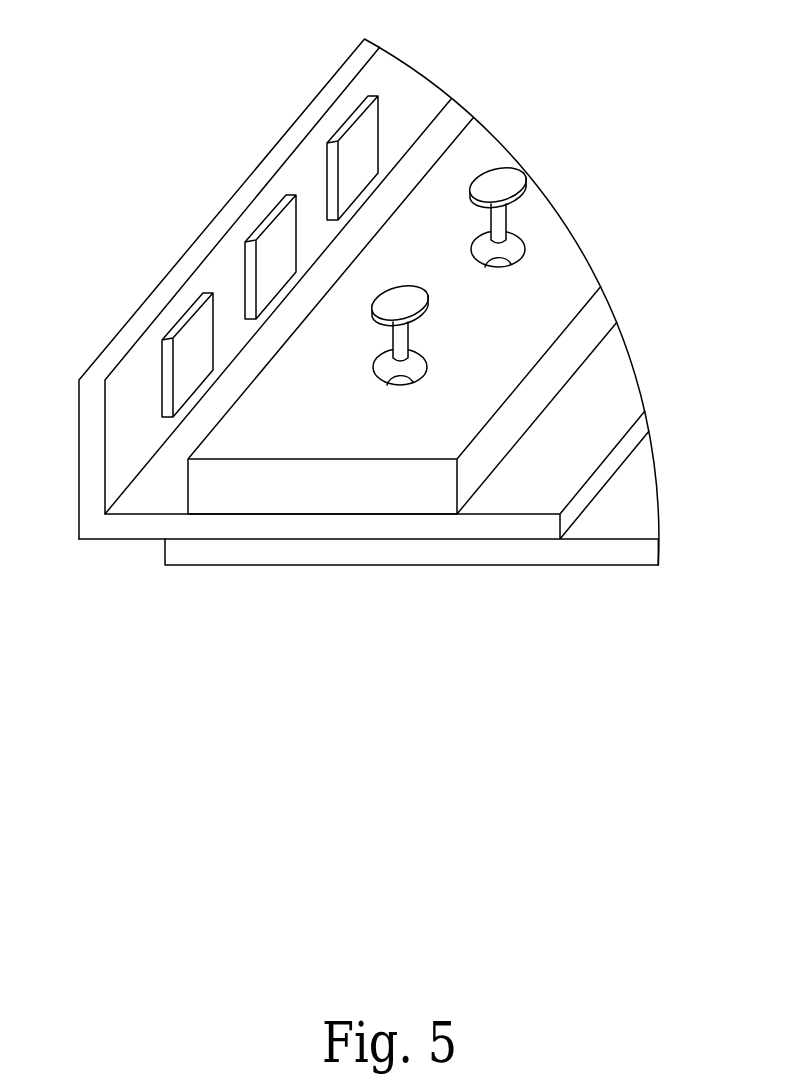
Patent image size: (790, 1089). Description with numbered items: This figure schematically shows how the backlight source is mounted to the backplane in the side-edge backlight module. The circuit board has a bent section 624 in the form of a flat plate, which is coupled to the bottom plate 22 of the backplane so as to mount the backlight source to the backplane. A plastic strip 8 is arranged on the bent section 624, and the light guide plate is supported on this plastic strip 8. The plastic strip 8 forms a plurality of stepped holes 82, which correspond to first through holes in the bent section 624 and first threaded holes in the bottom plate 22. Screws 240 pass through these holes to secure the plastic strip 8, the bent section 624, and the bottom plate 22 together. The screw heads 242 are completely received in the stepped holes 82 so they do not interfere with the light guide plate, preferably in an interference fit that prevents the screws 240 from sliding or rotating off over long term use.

The bent section 624 is at (145, 527).
The plastic strip 8 is at (349, 424).
The bottom plate 22 is at (472, 552).
The screw 240 is at (601, 148).
The screw head 242 is at (523, 192).
The stepped hole 82 is at (523, 242).